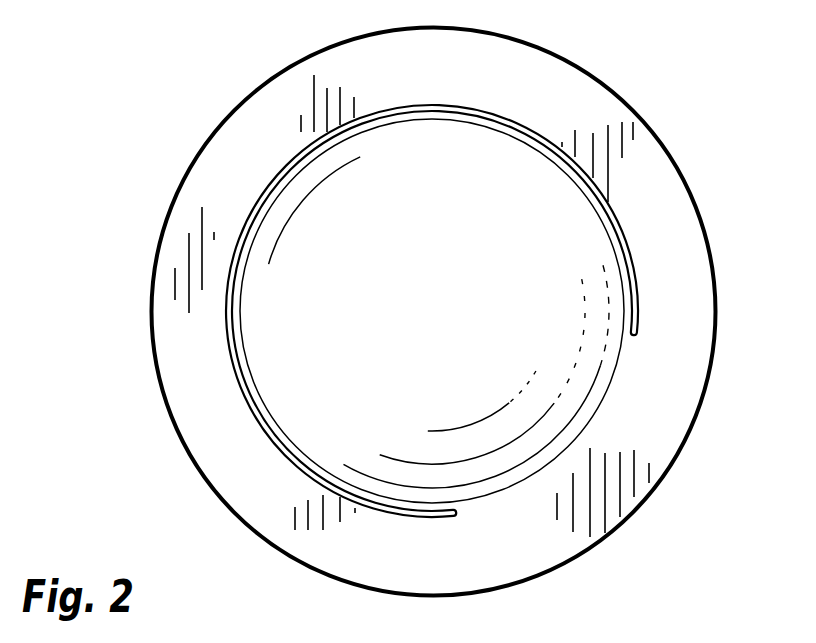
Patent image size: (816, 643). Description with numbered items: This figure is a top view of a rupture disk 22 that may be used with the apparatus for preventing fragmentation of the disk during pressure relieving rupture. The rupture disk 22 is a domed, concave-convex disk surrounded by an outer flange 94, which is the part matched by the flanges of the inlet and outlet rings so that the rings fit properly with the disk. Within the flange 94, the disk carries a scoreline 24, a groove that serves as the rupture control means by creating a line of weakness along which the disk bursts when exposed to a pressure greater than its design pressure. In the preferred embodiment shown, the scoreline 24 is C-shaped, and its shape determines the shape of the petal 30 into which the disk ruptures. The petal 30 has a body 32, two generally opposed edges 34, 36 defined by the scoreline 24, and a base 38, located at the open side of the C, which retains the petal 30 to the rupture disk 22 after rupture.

The flange 94 is at (645, 172).
The rupture disk 22 is at (662, 265).
The scoreline 24 is at (292, 158).
The edge 36 is at (563, 162).
The base 38 is at (606, 414).
The edge 34 is at (252, 376).
The petal 30 is at (425, 289).
The body 32 is at (466, 291).